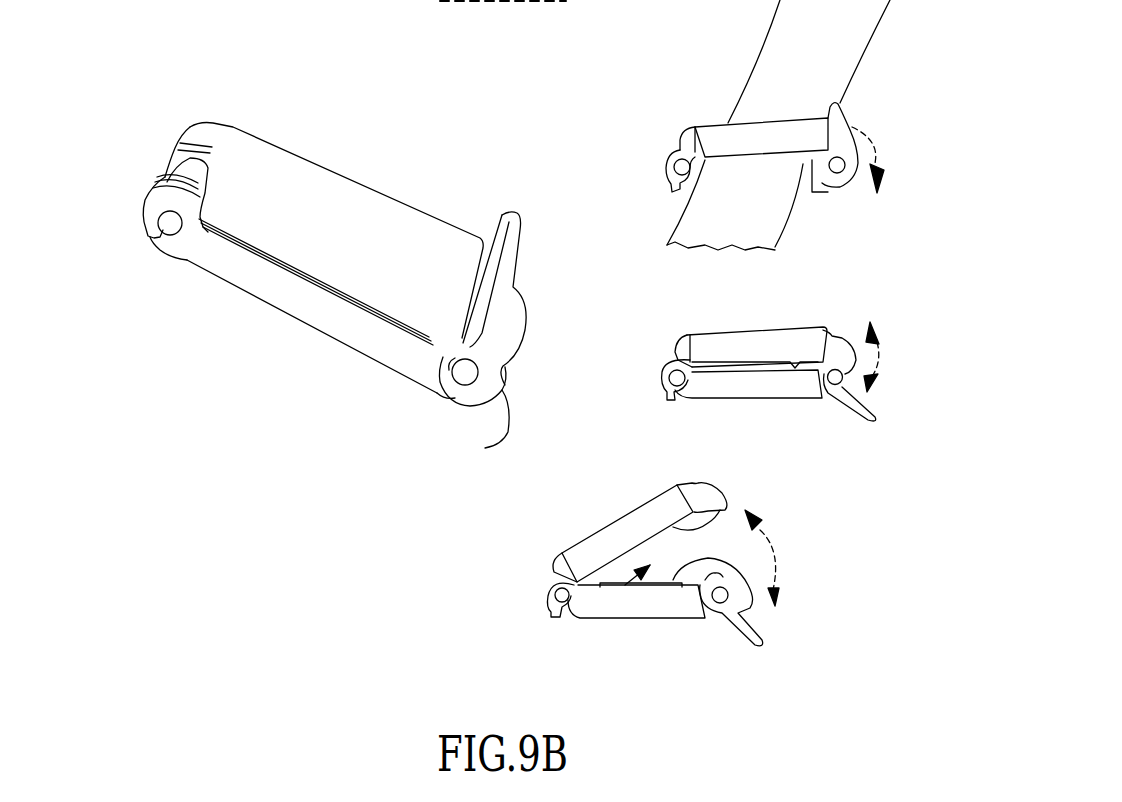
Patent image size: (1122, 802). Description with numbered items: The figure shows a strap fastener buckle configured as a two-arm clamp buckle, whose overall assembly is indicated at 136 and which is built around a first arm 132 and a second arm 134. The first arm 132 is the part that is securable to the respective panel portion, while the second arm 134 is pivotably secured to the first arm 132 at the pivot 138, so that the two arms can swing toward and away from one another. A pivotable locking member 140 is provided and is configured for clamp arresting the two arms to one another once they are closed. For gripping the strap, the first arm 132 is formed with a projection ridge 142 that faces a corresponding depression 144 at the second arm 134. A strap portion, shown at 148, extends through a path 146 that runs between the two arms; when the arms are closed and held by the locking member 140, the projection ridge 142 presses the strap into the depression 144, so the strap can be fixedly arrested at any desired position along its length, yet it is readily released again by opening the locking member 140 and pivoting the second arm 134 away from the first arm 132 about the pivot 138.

The first arm 132 is at (243, 277).
The second arm 134 is at (328, 197).
The buckle assembly 136 is at (266, 372).
The pivot 138 is at (158, 237).
The pivotable locking member 140 is at (735, 628).
The projection ridge 142 is at (748, 585).
The depression 144 is at (727, 508).
The path 146 is at (487, 448).
The strap 148 is at (858, 37).